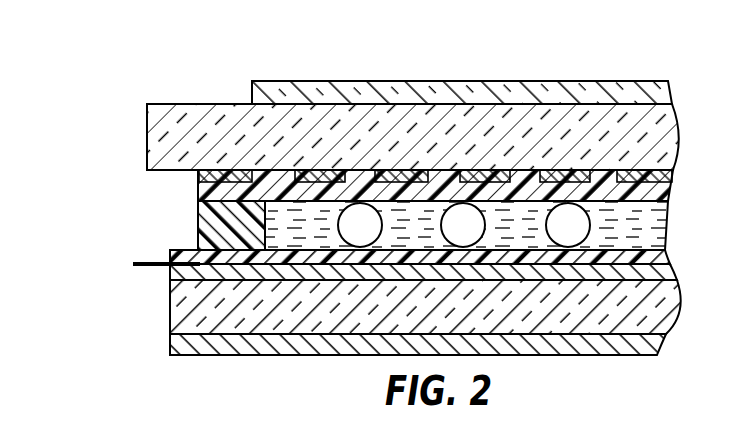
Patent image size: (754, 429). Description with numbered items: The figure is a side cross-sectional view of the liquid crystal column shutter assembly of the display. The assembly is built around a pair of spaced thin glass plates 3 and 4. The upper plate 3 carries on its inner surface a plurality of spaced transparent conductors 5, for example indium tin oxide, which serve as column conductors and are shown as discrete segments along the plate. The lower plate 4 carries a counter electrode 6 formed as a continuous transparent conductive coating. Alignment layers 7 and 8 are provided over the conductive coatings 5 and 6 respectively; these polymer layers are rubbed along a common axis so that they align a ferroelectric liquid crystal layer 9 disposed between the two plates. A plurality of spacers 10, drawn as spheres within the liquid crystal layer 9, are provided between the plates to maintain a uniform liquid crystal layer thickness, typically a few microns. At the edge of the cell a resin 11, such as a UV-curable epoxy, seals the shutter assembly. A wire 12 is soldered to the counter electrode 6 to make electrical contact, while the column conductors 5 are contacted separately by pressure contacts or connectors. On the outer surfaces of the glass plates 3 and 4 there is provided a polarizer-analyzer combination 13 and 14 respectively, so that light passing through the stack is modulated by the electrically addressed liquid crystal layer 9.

The glass plate 3 is at (676, 132).
The glass plate 4 is at (201, 336).
The transparent conductors 5 is at (553, 170).
The counter electrode 6 is at (679, 271).
The alignment layer 7 is at (669, 191).
The alignment layer 8 is at (669, 256).
The ferroelectric liquid crystal layer 9 is at (665, 213).
The spacers 10 is at (588, 224).
The resin 11 is at (198, 214).
The wire 12 is at (135, 266).
The polarizer-analyzer combination 13 is at (404, 81).
The polarizer-analyzer combination 14 is at (337, 356).